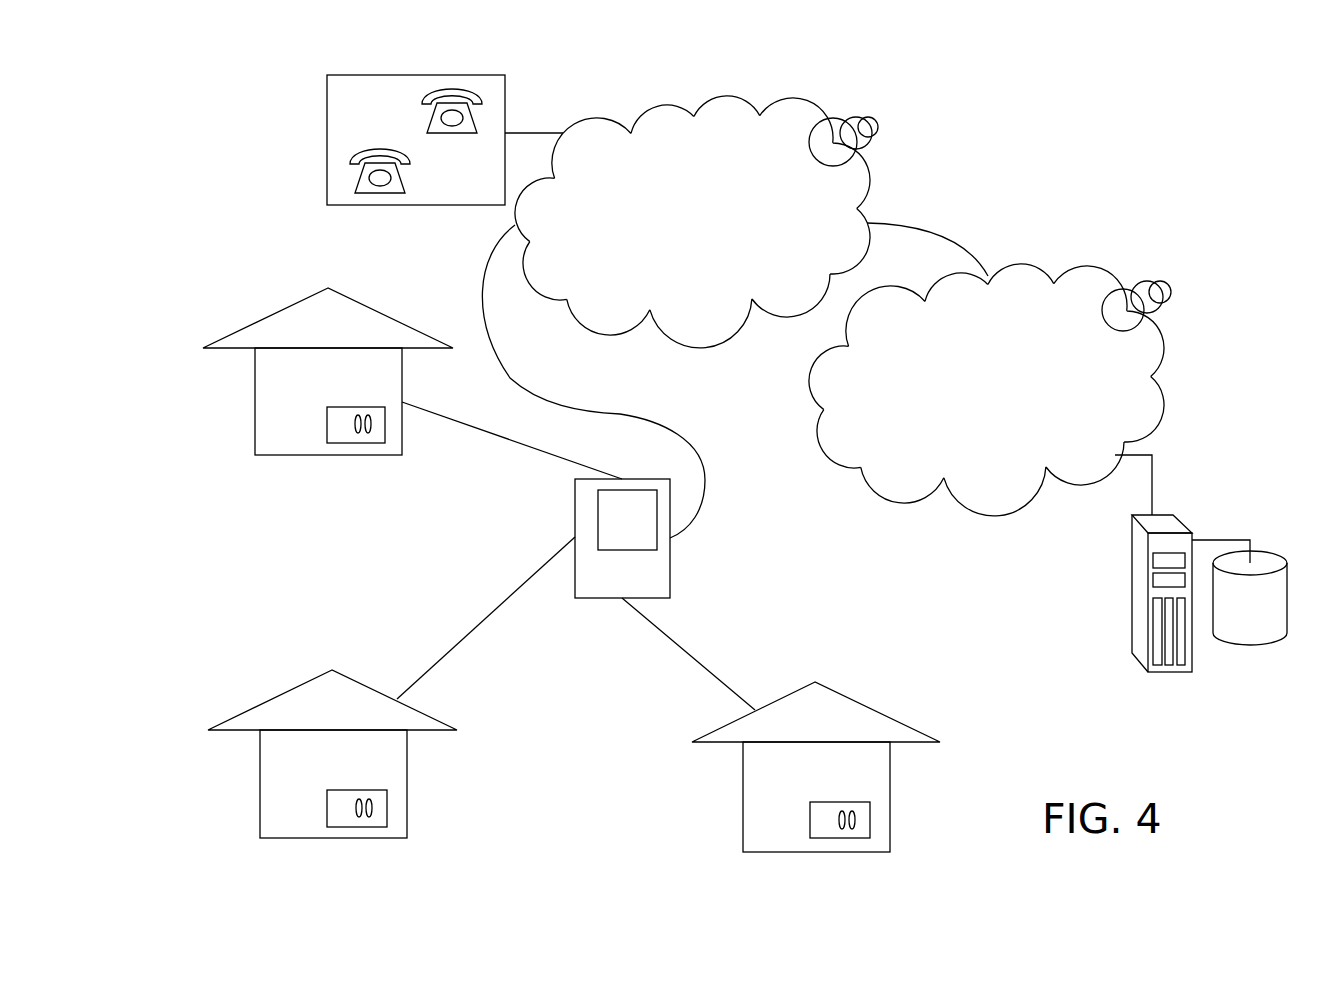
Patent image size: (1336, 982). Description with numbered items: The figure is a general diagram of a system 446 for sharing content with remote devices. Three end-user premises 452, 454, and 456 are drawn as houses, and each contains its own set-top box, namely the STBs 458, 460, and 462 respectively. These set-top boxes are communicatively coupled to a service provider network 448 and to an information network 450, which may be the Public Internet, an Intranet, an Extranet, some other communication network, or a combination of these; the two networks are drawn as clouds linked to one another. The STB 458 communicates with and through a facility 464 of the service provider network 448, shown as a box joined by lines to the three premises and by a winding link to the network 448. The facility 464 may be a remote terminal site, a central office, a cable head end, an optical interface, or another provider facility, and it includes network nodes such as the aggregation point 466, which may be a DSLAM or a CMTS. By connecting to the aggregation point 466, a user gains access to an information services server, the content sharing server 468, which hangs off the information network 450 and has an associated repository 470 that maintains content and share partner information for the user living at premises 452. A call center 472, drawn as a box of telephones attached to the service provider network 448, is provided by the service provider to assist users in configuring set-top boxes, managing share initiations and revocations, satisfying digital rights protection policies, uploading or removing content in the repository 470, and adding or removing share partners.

The system 446 is at (1101, 173).
The service provider network 448 is at (721, 167).
The information network 450 is at (1036, 312).
The premises 452 is at (318, 372).
The premises 454 is at (322, 754).
The premises 456 is at (806, 767).
The STB 458 is at (331, 409).
The STB 460 is at (334, 792).
The STB 462 is at (818, 804).
The facility 464 is at (622, 538).
The aggregation point 466 is at (648, 537).
The content sharing server 468 is at (1122, 534).
The repository 470 is at (1272, 622).
The call center 472 is at (314, 164).